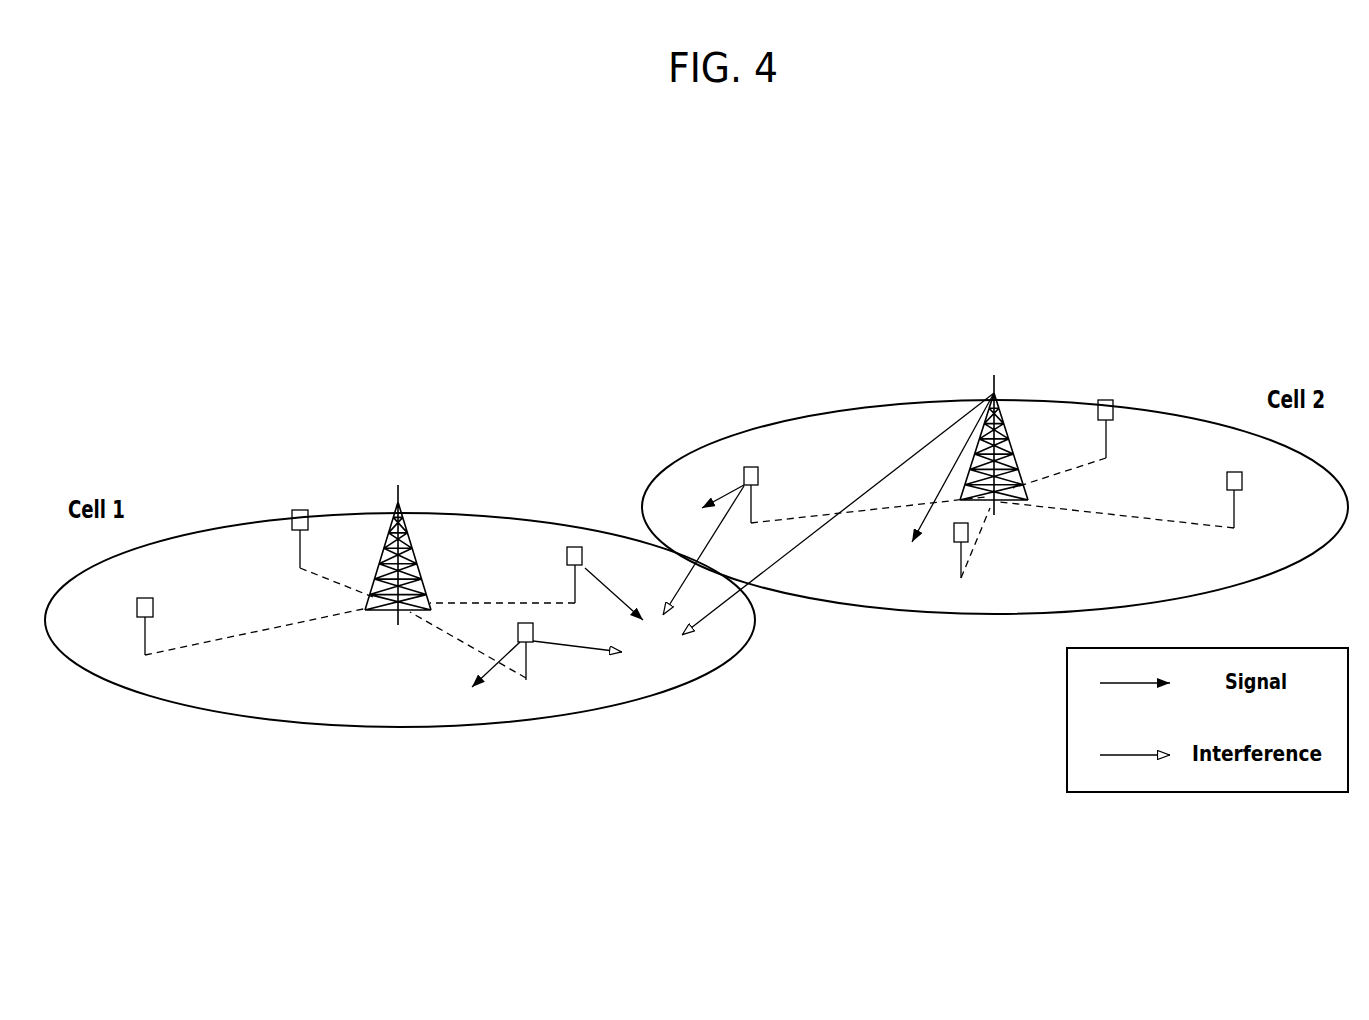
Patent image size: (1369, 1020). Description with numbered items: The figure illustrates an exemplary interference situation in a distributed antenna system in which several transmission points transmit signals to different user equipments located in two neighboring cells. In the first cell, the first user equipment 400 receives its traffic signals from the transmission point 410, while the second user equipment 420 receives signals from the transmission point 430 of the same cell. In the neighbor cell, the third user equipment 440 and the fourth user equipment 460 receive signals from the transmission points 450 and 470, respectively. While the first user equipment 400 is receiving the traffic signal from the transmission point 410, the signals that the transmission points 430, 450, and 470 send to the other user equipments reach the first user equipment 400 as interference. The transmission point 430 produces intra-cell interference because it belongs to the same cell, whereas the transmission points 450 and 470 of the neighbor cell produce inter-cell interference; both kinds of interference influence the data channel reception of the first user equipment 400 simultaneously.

The UE 1 400 is at (673, 652).
The transmission point 410 is at (567, 555).
The UE 2 420 is at (468, 705).
The transmission point 430 is at (527, 660).
The UE 3 440 is at (652, 512).
The transmission point 450 is at (744, 476).
The UE 4 460 is at (914, 560).
The transmission point 470 is at (997, 390).